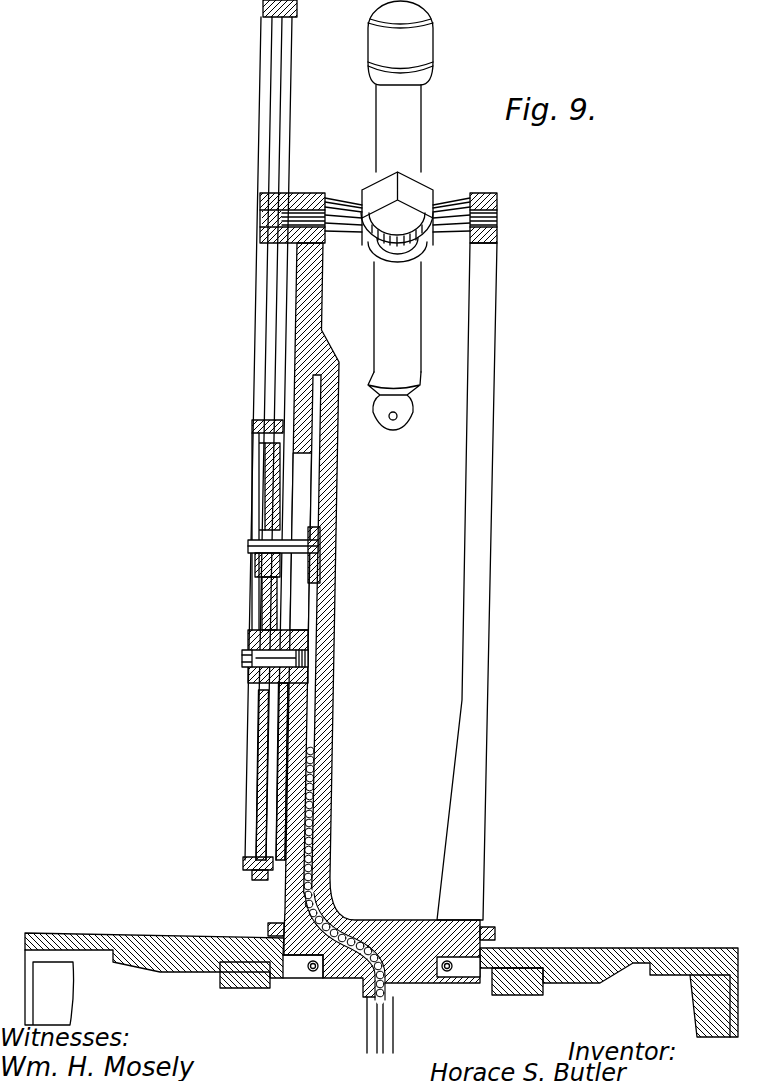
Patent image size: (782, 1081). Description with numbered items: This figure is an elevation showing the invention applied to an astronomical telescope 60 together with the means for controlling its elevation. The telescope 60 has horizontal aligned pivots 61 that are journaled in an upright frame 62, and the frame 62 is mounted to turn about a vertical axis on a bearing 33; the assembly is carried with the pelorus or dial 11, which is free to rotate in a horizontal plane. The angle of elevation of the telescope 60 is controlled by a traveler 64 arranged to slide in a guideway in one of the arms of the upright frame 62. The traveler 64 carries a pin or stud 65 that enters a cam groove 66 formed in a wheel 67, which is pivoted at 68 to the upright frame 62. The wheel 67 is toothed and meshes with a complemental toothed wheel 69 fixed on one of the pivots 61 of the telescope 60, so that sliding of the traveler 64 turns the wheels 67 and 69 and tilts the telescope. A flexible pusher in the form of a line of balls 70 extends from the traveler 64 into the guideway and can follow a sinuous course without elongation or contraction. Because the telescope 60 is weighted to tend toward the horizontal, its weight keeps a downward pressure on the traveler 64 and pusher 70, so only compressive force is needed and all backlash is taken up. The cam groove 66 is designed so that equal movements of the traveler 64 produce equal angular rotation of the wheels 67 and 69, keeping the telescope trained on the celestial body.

The pelorus or dial 11 is at (572, 958).
The bearing 33 is at (480, 920).
The astronomical telescope 60 is at (400, 327).
The pivots 61 is at (333, 207).
The frame 62 is at (483, 462).
The traveler 64 is at (312, 688).
The pin or stud 65 is at (265, 542).
The cam groove 66 is at (255, 527).
The wheel 67 is at (260, 462).
The pivot 68 is at (303, 650).
The complemental toothed wheel 69 is at (287, 108).
The line of balls 70 is at (330, 825).